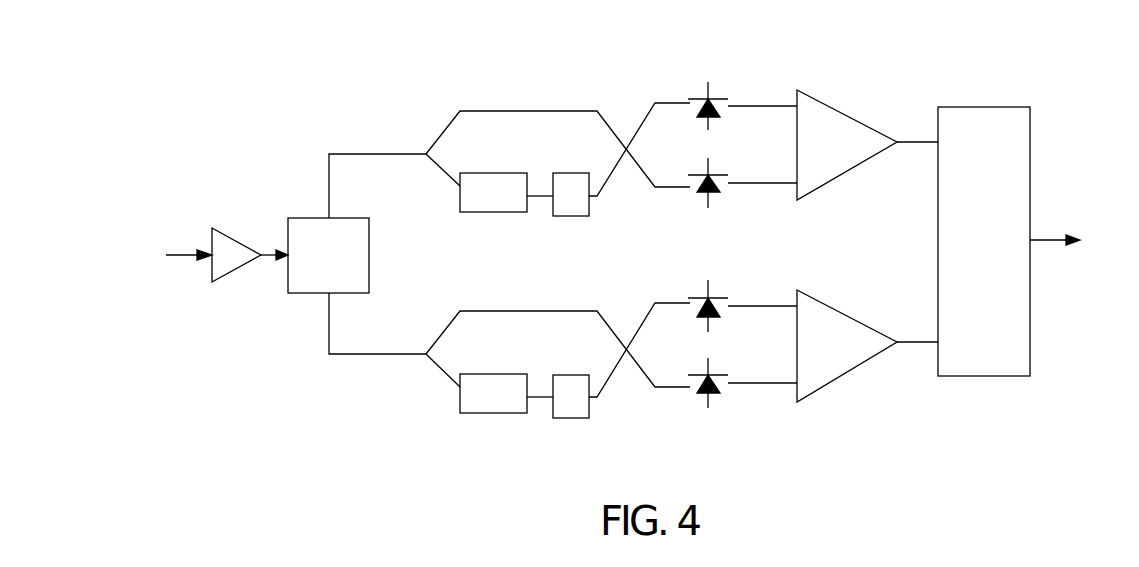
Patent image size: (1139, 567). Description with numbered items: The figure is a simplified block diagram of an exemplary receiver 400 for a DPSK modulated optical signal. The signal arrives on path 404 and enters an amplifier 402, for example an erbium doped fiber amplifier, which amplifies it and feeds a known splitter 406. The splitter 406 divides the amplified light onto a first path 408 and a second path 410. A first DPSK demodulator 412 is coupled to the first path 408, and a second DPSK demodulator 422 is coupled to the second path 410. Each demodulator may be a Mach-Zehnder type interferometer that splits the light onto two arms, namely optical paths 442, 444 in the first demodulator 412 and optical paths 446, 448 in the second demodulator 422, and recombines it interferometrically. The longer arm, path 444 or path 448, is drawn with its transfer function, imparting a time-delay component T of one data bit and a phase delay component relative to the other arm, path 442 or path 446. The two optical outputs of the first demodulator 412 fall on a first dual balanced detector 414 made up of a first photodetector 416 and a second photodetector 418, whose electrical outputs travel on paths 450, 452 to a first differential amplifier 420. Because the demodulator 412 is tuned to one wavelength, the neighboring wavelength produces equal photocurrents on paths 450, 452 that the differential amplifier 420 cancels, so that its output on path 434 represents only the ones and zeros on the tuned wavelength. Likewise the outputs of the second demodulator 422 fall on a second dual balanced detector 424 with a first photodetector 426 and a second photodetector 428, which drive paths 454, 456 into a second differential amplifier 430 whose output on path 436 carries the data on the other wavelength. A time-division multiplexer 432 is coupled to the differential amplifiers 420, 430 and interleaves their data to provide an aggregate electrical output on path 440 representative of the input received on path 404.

The receiver 400 is at (324, 52).
The amplifier 402 is at (237, 237).
The path 404 is at (190, 251).
The splitter 406 is at (310, 216).
The first path 408 is at (340, 152).
The second path 410 is at (350, 357).
The first DPSK demodulator 412 is at (531, 134).
The first dual balanced detector 414 is at (675, 125).
The first photodetector 416 is at (700, 99).
The second photodetector 418 is at (702, 190).
The first differential amplifier 420 is at (828, 98).
The second DPSK demodulator 422 is at (529, 375).
The second dual balanced detector 424 is at (707, 358).
The first photodetector 426 is at (700, 299).
The second photodetector 428 is at (715, 392).
The second differential amplifier 430 is at (817, 392).
The time-division multiplexer 432 is at (985, 377).
The path 434 is at (922, 140).
The path 436 is at (909, 338).
The path 440 is at (1048, 237).
The optical path 442 is at (452, 122).
The optical path 444 is at (445, 175).
The optical path 446 is at (452, 322).
The optical path 448 is at (445, 370).
The path 450 is at (750, 103).
The path 452 is at (750, 184).
The path 454 is at (745, 305).
The path 456 is at (780, 382).